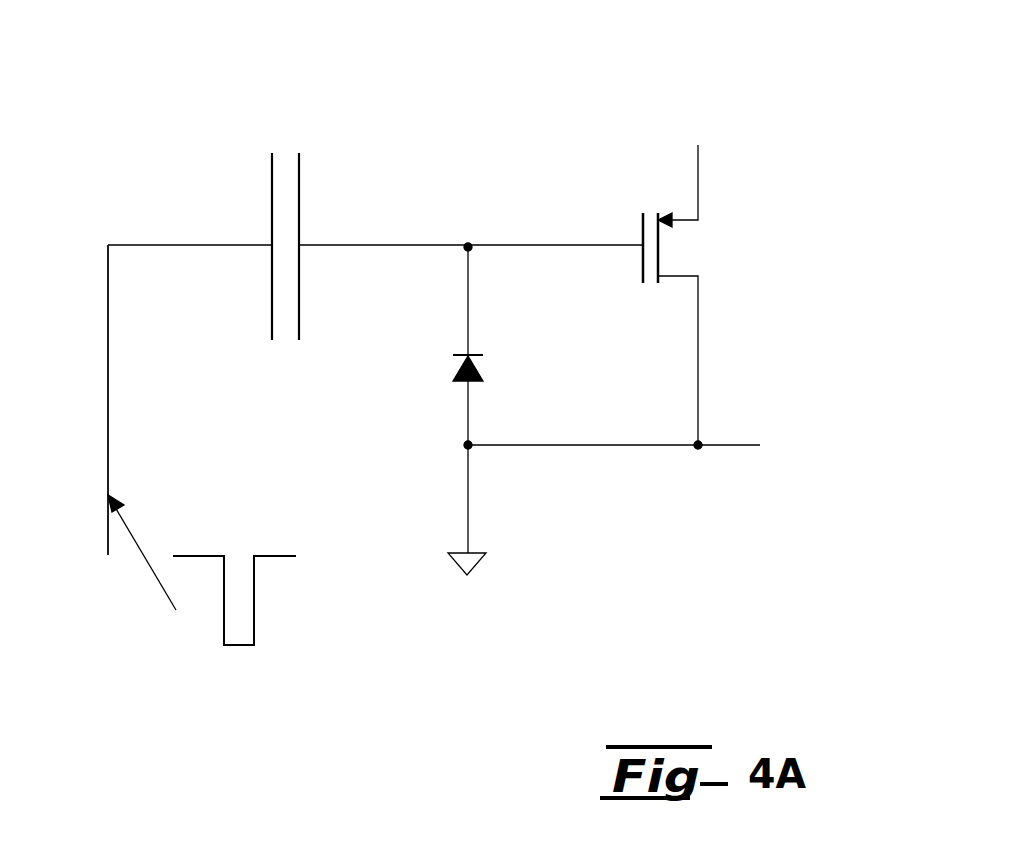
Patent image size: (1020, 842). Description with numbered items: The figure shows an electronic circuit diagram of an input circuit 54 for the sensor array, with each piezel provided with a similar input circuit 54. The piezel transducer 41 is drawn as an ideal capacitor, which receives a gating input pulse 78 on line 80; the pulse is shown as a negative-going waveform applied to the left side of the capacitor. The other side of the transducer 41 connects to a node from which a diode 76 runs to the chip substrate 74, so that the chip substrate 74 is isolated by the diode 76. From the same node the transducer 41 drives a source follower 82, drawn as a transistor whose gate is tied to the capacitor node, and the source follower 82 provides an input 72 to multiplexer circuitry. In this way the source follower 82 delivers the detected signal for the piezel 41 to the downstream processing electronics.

The input circuit 54 is at (146, 107).
The piezel transducer 41 is at (272, 218).
The source follower 82 is at (643, 226).
The input to multiplexer circuitry 72 is at (698, 176).
The diode 76 is at (467, 356).
The line 80 is at (108, 432).
The gating input pulse 78 is at (254, 607).
The chip substrate 74 is at (667, 445).